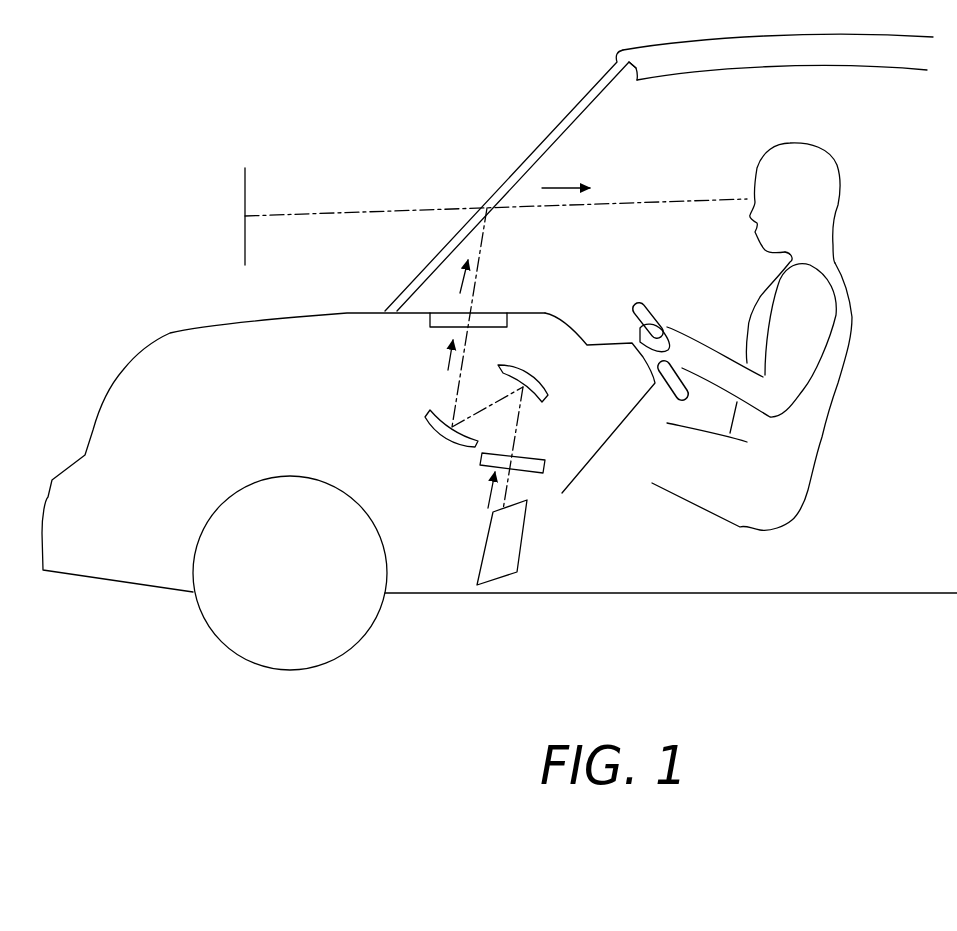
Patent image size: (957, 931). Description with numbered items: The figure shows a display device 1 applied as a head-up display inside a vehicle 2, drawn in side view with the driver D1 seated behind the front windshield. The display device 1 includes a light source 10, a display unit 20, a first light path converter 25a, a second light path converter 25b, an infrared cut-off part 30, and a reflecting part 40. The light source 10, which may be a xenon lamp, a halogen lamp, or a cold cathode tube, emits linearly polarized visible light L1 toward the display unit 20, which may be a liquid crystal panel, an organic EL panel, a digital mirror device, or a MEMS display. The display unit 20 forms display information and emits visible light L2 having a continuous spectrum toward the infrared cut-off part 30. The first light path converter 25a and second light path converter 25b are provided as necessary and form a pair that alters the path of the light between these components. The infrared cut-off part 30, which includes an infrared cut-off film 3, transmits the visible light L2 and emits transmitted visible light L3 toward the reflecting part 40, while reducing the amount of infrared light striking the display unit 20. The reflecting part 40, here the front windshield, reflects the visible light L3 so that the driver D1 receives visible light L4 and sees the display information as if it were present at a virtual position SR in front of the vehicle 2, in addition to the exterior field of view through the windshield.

The display device 1 is at (418, 113).
The vehicle 2 is at (752, 595).
The infrared cut-off film 3 is at (490, 302).
The light source 10 is at (527, 527).
The display unit 20 is at (535, 453).
The first light path converter 25a is at (540, 375).
The second light path converter 25b is at (428, 415).
The infrared cut-off part 30 is at (510, 320).
The reflecting part 40 is at (496, 188).
The virtual position SR is at (233, 197).
The driver D1 is at (850, 297).
The visible light L1 is at (488, 500).
The visible light L2 is at (445, 358).
The visible light L3 is at (462, 287).
The visible light L4 is at (562, 187).